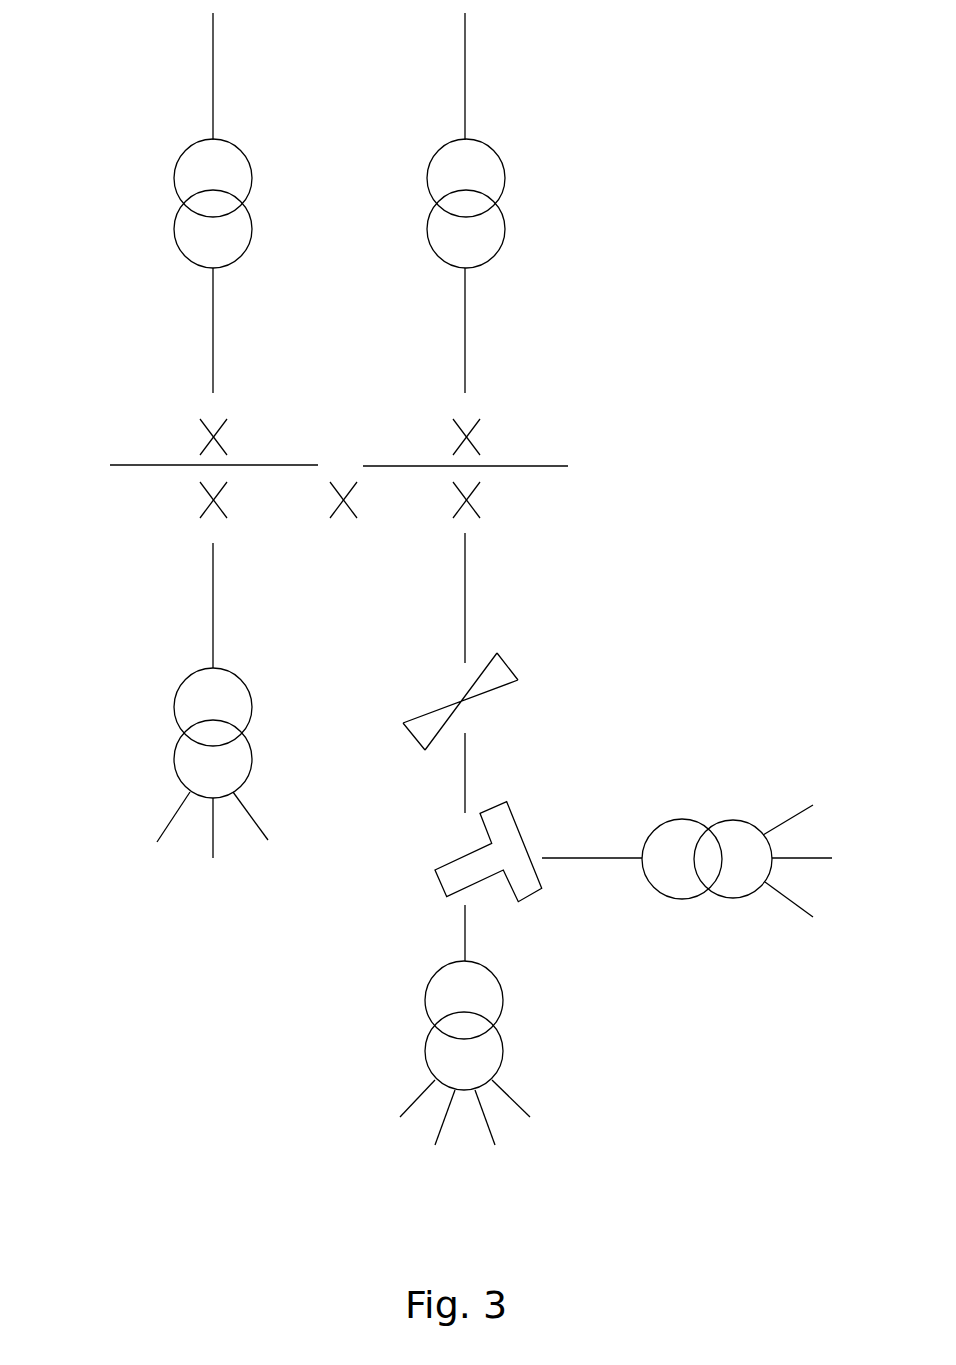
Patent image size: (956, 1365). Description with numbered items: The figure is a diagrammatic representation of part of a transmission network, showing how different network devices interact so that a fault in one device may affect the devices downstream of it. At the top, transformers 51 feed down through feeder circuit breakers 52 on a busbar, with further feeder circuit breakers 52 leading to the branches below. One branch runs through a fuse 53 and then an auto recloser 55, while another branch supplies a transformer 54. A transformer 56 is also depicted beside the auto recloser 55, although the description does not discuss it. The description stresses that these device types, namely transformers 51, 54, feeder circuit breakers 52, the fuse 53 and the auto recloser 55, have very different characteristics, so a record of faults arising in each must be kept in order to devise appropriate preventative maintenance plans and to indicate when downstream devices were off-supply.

The transformer 51 is at (505, 240).
The feeder circuit breaker 52 is at (477, 435).
The fuse 53 is at (497, 653).
The transformer 54 is at (178, 737).
The auto recloser 55 is at (522, 832).
The transformer 56 is at (722, 898).